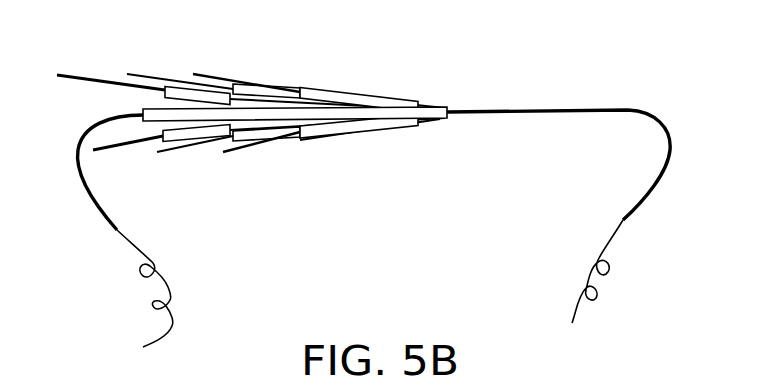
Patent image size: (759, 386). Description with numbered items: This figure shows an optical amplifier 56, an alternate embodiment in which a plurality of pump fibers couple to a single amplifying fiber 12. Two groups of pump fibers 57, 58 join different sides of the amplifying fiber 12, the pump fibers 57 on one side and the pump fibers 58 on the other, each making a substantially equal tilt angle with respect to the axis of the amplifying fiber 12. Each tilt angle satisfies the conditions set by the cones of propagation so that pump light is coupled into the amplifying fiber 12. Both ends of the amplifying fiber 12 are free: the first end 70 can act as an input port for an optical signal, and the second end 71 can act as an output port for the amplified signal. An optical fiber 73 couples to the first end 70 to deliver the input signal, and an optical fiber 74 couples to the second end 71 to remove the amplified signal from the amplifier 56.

The amplifying fiber 12 is at (577, 191).
The optical amplifier 56 is at (318, 113).
The pump fibers 57 is at (213, 72).
The pump fibers 58 is at (230, 160).
The first end 70 is at (115, 230).
The second end 71 is at (623, 215).
The optical fiber 73 is at (170, 283).
The optical fiber 74 is at (583, 282).